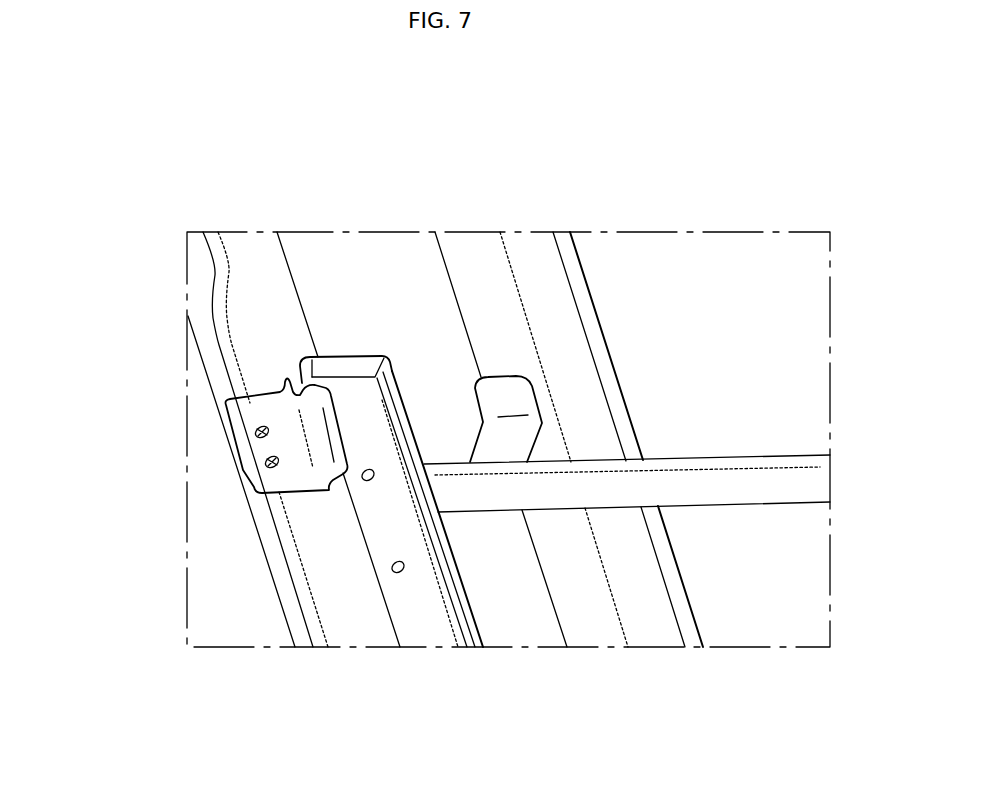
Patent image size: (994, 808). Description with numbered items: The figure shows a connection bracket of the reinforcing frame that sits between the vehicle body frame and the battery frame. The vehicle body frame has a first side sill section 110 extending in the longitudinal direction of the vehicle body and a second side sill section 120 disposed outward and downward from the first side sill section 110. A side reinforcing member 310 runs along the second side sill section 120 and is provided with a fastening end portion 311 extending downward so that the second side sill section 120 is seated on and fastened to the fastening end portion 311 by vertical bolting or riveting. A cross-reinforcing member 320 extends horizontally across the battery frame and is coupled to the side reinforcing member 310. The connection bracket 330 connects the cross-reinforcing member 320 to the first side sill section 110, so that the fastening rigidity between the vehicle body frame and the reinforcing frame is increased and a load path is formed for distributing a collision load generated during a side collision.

The first side sill section 110 is at (477, 247).
The second side sill section 120 is at (250, 253).
The side reinforcing member 310 is at (422, 612).
The fastening end portion 311 is at (278, 447).
The cross-reinforcing member 320 is at (752, 488).
The connection bracket 330 is at (500, 440).